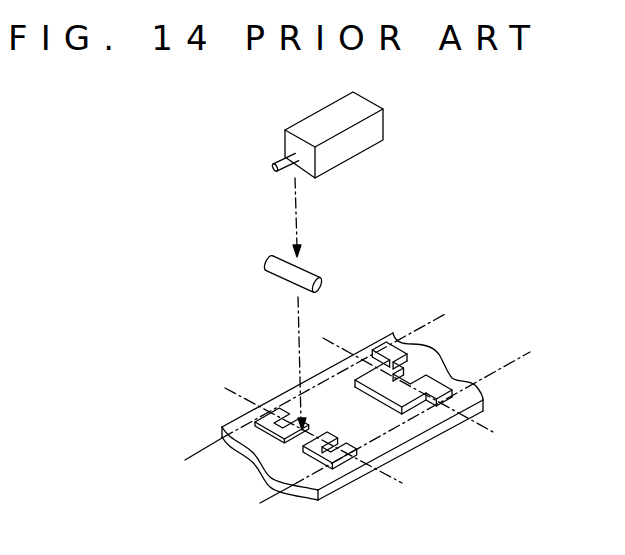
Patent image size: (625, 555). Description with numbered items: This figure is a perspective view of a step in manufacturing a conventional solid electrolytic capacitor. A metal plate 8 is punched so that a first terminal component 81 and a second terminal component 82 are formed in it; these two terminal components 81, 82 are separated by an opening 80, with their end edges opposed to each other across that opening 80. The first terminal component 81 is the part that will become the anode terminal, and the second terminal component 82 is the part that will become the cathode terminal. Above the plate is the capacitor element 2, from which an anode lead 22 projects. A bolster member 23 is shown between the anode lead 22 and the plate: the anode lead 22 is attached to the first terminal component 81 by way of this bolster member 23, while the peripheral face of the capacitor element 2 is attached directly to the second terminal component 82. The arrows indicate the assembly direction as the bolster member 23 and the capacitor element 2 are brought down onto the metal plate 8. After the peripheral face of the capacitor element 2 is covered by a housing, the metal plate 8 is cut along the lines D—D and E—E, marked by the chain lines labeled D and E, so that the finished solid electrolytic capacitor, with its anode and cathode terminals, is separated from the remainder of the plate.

The capacitor element 2 is at (367, 132).
The anode lead 22 is at (277, 167).
The bolster member 23 is at (320, 283).
The metal plate 8 is at (412, 430).
The opening 80 is at (298, 418).
The first terminal component 81 is at (308, 362).
The second terminal component 82 is at (395, 387).
The cutting line D— D is at (359, 407).
The cutting line E— E is at (357, 412).